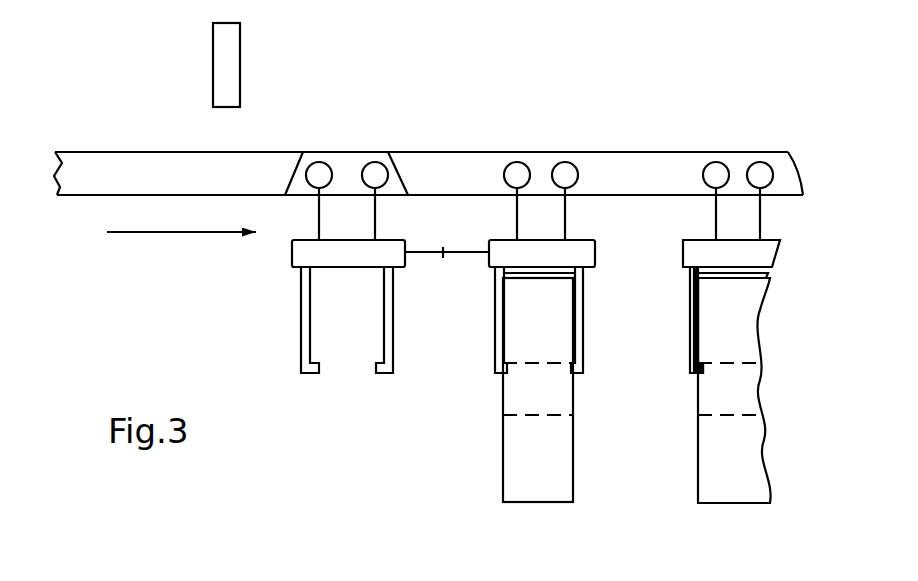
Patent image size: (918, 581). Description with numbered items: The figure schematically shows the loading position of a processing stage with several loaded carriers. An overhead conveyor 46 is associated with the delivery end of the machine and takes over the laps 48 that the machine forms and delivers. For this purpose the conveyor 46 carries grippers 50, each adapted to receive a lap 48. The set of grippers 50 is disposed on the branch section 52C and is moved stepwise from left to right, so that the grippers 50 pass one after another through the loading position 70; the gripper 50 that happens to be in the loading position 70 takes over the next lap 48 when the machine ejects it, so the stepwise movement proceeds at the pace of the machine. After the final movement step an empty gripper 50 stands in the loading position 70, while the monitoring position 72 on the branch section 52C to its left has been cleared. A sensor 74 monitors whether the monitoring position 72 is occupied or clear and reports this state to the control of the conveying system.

The sensor 74 is at (224, 63).
The monitoring position 72 is at (246, 145).
The branch section 52C is at (655, 166).
The loading position 70 is at (354, 143).
The gripper 50 is at (397, 337).
The overhead conveyor 46 is at (561, 143).
The lap 48 is at (692, 438).